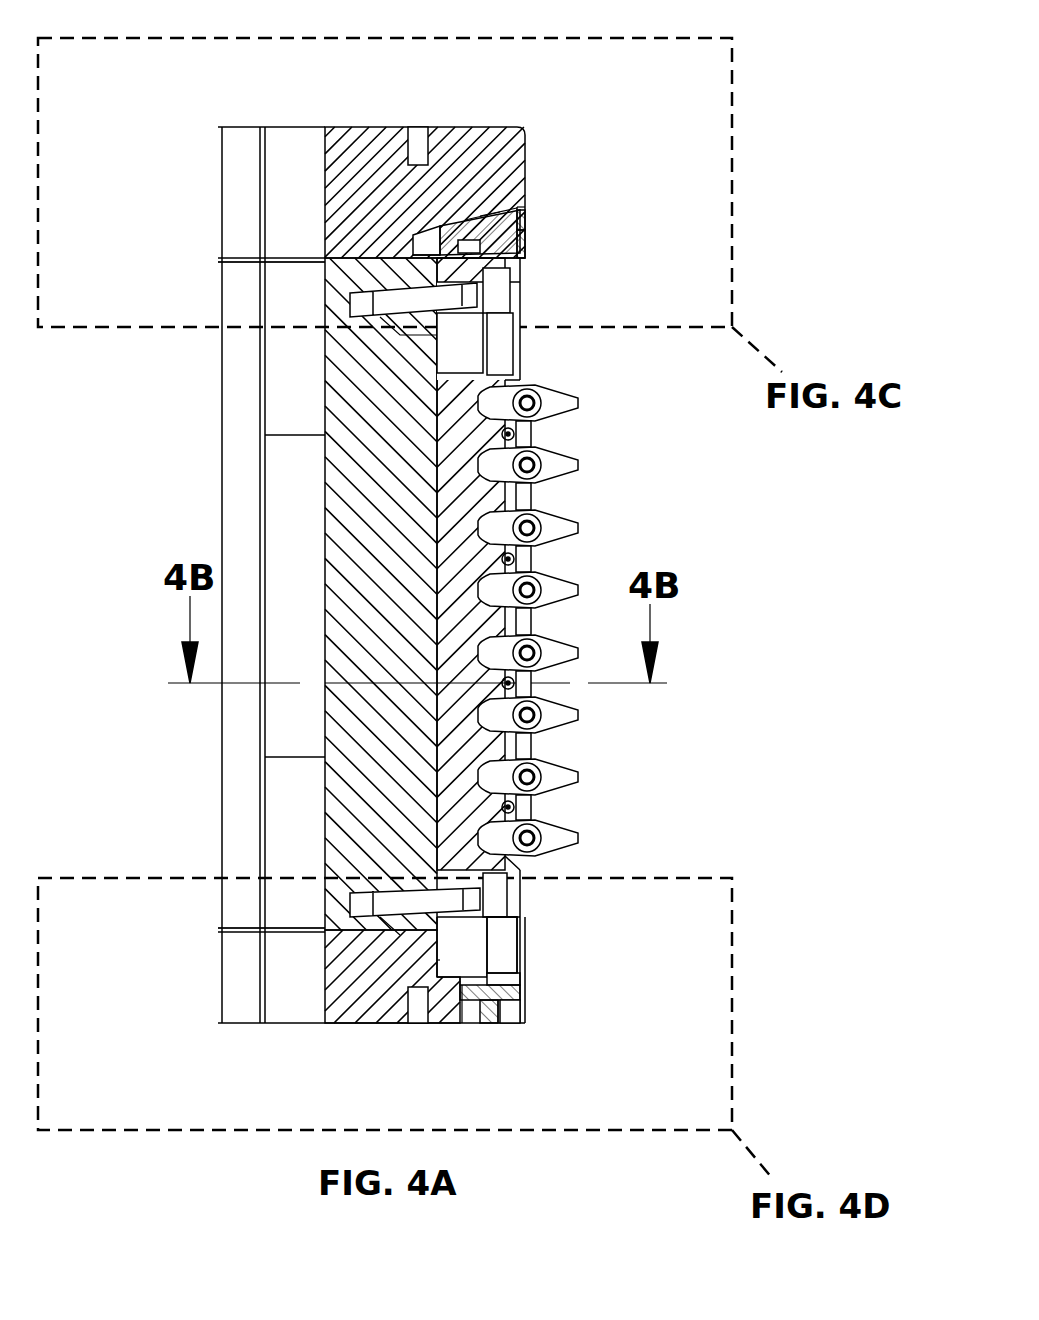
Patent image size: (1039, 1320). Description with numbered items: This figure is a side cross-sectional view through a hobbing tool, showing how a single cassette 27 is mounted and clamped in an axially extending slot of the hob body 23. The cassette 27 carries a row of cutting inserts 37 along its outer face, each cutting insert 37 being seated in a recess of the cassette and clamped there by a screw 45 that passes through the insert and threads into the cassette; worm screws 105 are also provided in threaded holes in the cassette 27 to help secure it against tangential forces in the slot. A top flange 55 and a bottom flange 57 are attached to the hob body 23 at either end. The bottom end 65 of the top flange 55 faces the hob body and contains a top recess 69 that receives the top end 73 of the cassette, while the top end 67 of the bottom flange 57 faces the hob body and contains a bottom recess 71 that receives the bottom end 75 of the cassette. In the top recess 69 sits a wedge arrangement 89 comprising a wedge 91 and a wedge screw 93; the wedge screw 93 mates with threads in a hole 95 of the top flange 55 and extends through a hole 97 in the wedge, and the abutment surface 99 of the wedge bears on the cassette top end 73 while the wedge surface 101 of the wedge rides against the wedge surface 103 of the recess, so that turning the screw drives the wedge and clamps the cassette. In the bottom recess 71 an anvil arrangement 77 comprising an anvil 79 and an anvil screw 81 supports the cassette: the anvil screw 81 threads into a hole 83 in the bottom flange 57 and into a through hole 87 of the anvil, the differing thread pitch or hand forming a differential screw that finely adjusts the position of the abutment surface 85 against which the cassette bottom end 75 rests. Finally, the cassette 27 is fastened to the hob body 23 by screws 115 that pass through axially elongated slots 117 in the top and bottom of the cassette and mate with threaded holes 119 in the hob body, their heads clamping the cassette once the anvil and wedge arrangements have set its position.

The hob body 23 is at (325, 595).
The cassette 27 is at (522, 340).
The cutting insert 37 is at (582, 398).
The screw 45 is at (562, 478).
The top flange 55 is at (325, 190).
The bottom flange 57 is at (325, 977).
The bottom end 65 is at (320, 264).
The top end 67 is at (287, 937).
The top recess 69 is at (525, 245).
The bottom recess 71 is at (520, 972).
The top end 73 is at (410, 240).
The bottom end 75 is at (452, 985).
The anvil arrangement 77 is at (527, 990).
The anvil 79 is at (520, 1005).
The anvil screw 81 is at (478, 997).
The hole 83 is at (490, 1027).
The abutment surface 85 is at (437, 962).
The through hole 87 is at (510, 1003).
The wedge arrangement 89 is at (525, 208).
The wedge 91 is at (525, 238).
The wedge screw 93 is at (458, 218).
The hole 95 is at (427, 233).
The hole 97 is at (472, 212).
The abutment surface 99 is at (525, 262).
The wedge surface 101 is at (487, 210).
The wedge surface 103 is at (527, 208).
The worm screw 105 is at (558, 556).
The screw 115 is at (392, 322).
The axially elongated slot 117 is at (518, 323).
The hole 119 is at (348, 300).